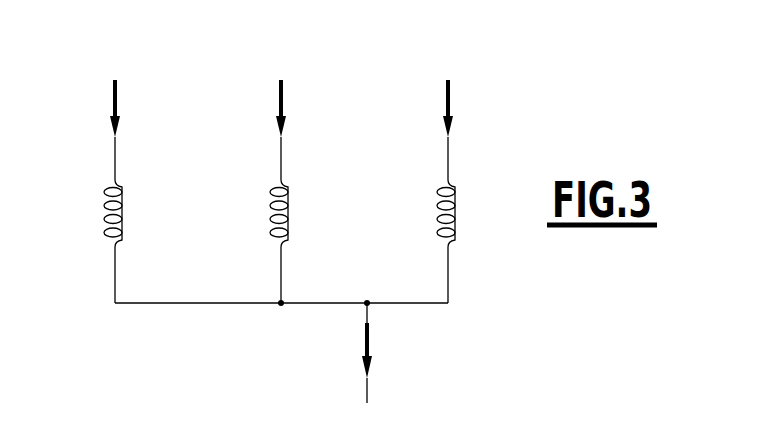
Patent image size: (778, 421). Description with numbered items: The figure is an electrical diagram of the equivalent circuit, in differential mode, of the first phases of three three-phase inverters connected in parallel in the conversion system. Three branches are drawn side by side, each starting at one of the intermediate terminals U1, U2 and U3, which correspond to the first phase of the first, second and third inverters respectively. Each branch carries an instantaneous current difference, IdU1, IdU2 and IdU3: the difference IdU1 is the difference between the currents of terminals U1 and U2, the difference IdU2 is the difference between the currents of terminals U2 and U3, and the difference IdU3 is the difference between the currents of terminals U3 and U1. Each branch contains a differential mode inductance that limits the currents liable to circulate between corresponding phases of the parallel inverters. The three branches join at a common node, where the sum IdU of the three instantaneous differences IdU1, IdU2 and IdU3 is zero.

The intermediate terminal U1 is at (120, 112).
The intermediate terminal U2 is at (278, 112).
The intermediate terminal U3 is at (444, 112).
The instantaneous current difference IdU1 is at (88, 108).
The instantaneous current difference IdU2 is at (253, 108).
The instantaneous current difference IdU3 is at (424, 108).
The sum of instantaneous differences IdU is at (399, 355).